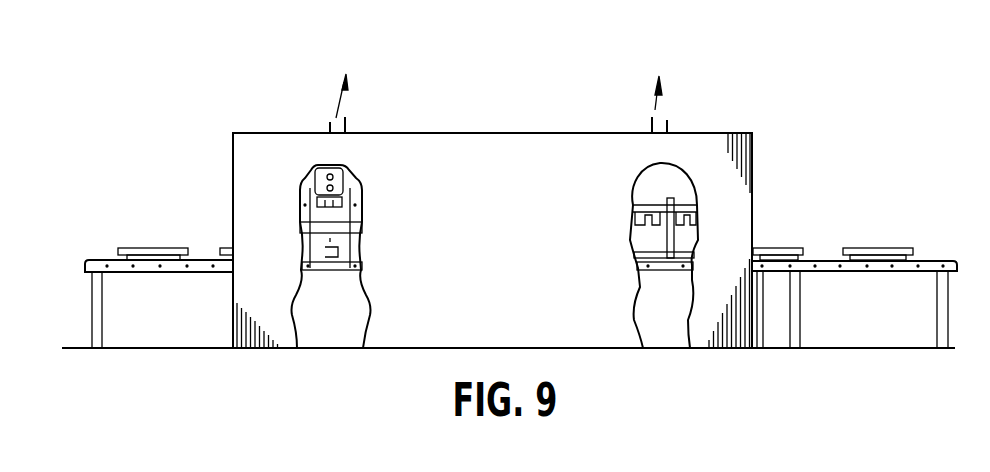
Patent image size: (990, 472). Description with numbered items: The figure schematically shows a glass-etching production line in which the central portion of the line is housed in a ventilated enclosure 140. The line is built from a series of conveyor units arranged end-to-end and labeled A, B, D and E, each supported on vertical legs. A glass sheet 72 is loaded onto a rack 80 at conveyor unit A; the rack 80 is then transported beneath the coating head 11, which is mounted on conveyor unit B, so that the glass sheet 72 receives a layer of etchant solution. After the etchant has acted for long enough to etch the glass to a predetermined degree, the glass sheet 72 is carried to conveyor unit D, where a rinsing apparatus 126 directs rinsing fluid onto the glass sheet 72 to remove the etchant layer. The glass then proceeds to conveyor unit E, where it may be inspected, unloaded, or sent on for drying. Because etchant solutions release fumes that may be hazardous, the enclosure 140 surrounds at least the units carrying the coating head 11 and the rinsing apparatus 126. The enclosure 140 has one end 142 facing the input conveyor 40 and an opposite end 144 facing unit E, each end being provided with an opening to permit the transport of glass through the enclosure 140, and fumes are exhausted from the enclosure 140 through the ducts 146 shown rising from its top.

The coating head 11 is at (356, 168).
The input conveyor 40 is at (112, 251).
The glass sheet 72 is at (148, 242).
The rack 80 is at (930, 247).
The rinsing apparatus 126 is at (670, 170).
The enclosure 140 is at (552, 133).
The end of enclosure 142 is at (233, 197).
The end of enclosure 144 is at (753, 195).
The ducts 146 is at (328, 122).